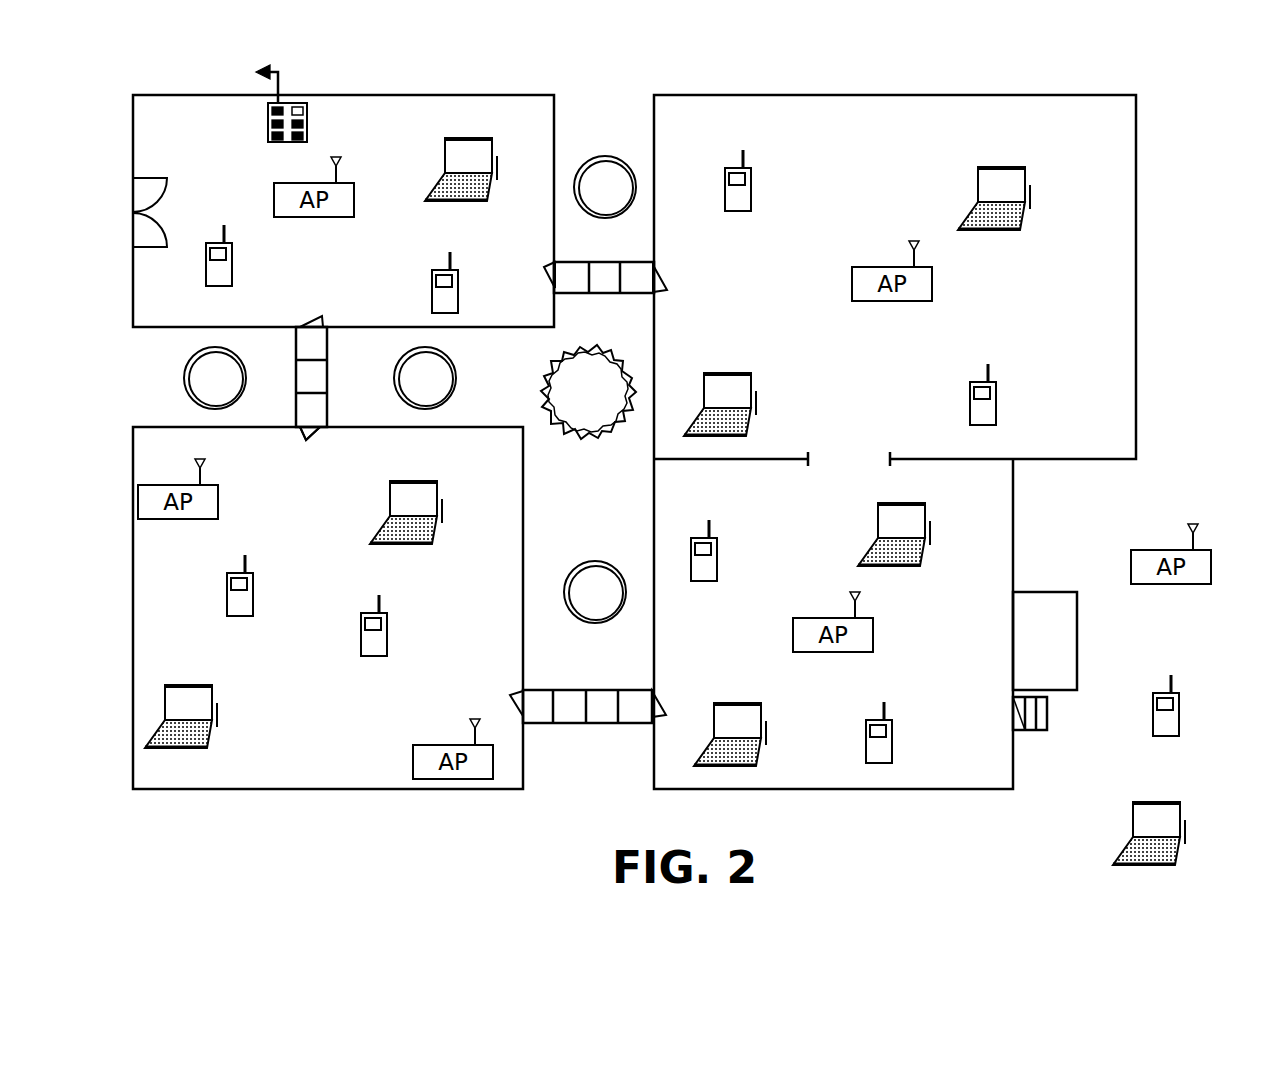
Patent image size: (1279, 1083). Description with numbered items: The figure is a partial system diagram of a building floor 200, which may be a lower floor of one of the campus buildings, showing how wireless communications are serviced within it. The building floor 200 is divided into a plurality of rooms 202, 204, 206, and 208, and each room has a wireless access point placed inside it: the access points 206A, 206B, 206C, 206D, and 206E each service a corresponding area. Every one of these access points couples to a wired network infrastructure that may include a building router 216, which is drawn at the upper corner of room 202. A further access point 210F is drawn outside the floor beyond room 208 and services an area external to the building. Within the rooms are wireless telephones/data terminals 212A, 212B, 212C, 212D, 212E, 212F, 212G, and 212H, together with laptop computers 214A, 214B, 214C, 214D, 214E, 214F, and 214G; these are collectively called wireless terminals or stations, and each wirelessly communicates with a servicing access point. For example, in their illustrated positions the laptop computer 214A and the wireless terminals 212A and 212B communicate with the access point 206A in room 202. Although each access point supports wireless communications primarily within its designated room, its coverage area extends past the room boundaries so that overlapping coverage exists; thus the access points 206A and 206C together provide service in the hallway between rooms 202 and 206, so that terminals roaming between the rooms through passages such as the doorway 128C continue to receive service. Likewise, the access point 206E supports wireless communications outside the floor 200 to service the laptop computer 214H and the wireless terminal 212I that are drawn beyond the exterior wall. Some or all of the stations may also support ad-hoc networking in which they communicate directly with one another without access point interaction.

The building floor 200 is at (231, 829).
The room 202 is at (513, 95).
The room 204 is at (735, 95).
The room 206 is at (293, 790).
The room 208 is at (825, 790).
The doorway 128C is at (302, 430).
The building router 216 is at (268, 127).
The wireless access point 206A is at (353, 199).
The wireless access point 206B is at (932, 285).
The wireless access point 206C is at (219, 500).
The wireless access point 206D is at (413, 763).
The wireless access point 206E is at (873, 633).
The access point 210F is at (1209, 565).
The wireless telephone/data terminal 212A is at (230, 273).
The wireless telephone/data terminal 212B is at (457, 300).
The wireless telephone/data terminal 212C is at (751, 198).
The wireless telephone/data terminal 212D is at (995, 413).
The wireless telephone/data terminal 212E is at (253, 605).
The wireless telephone/data terminal 212F is at (387, 643).
The wireless telephone/data terminal 212G is at (717, 570).
The wireless telephone/data terminal 212H is at (891, 751).
The wireless telephone/data terminal 212I is at (1178, 727).
The laptop computer 214A is at (457, 140).
The laptop computer 214B is at (717, 375).
The laptop computer 214C is at (993, 165).
The laptop computer 214D is at (182, 687).
The laptop computer 214E is at (403, 483).
The laptop computer 214F is at (727, 704).
The laptop computer 214G is at (893, 503).
The laptop computer 214H is at (1147, 803).